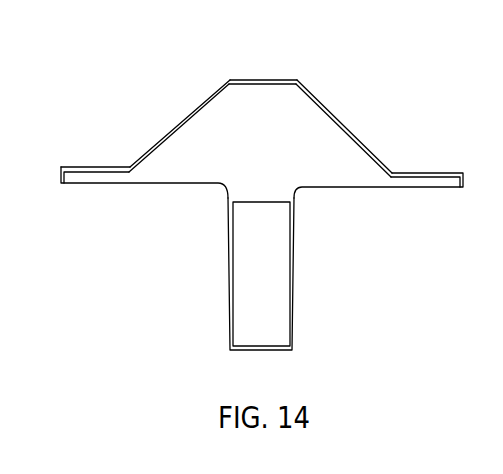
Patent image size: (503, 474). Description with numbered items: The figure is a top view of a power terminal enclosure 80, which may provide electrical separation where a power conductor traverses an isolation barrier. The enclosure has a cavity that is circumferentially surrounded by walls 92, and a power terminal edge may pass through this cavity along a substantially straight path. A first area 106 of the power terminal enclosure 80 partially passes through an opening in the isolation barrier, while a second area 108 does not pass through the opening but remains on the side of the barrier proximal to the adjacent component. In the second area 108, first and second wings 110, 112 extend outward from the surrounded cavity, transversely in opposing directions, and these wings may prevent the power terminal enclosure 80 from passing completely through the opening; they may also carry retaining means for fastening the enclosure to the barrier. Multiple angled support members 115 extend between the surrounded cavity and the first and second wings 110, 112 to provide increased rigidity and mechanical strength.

The power terminal enclosure 80 is at (114, 34).
The walls 92 is at (267, 157).
The first area 106 is at (186, 272).
The second area 108 is at (96, 117).
The first wing 110 is at (82, 178).
The second wing 112 is at (440, 182).
The angled support members 115 is at (205, 97).